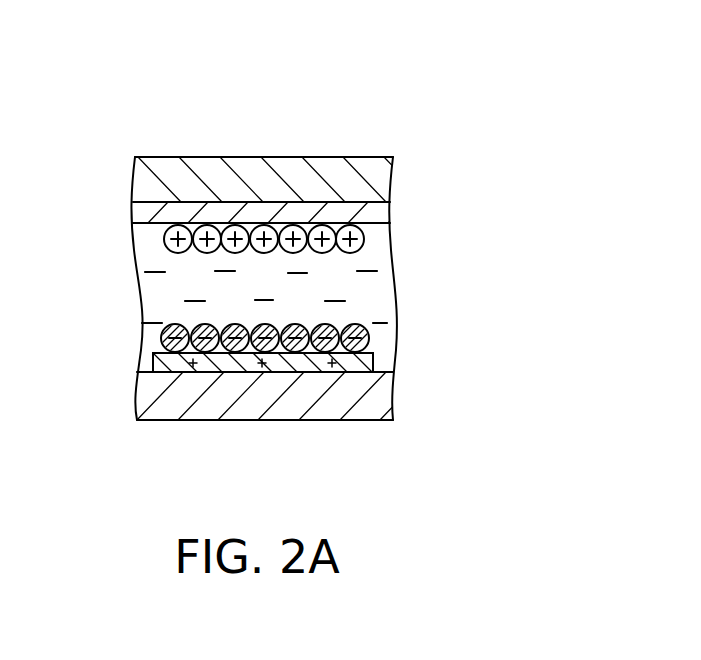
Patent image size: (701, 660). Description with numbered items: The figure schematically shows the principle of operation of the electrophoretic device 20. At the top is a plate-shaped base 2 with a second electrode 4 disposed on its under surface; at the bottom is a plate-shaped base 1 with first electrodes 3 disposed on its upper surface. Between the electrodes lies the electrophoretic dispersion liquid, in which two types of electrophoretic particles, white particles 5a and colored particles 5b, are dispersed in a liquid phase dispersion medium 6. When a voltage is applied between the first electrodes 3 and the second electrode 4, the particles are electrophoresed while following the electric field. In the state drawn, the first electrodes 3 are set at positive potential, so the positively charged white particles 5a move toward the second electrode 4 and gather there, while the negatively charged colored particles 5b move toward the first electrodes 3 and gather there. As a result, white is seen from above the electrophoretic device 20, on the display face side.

The electrophoretic device 20 is at (322, 110).
The base 1 is at (312, 397).
The base 2 is at (365, 183).
The first electrodes 3 is at (220, 373).
The second electrode 4 is at (197, 212).
The white particles 5a is at (160, 235).
The colored particles 5b is at (165, 337).
The dispersion medium 6 is at (165, 290).